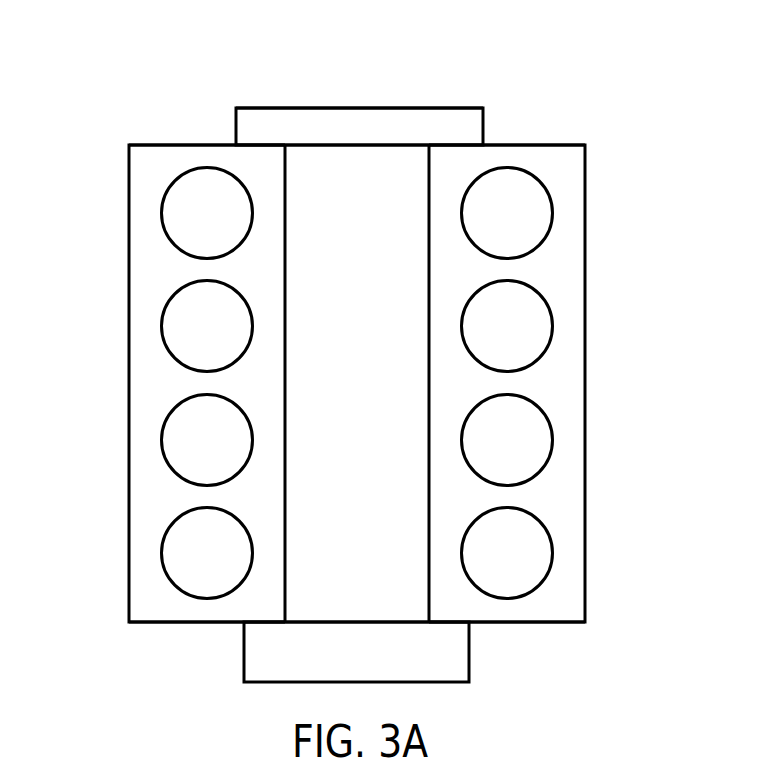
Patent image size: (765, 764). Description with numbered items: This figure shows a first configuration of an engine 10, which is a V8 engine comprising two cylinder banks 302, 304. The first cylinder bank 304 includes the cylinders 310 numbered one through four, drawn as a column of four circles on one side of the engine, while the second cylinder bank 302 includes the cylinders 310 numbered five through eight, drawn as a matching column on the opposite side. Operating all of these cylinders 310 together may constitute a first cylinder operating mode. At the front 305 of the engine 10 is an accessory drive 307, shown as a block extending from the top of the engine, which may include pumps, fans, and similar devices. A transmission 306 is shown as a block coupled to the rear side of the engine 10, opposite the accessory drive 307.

The engine 10 is at (380, 58).
The second cylinder bank 302 is at (190, 57).
The first cylinder bank 304 is at (538, 102).
The front 305 is at (345, 92).
The transmission 306 is at (356, 652).
The accessory drive 307 is at (359, 126).
The cylinders 310 is at (162, 222).